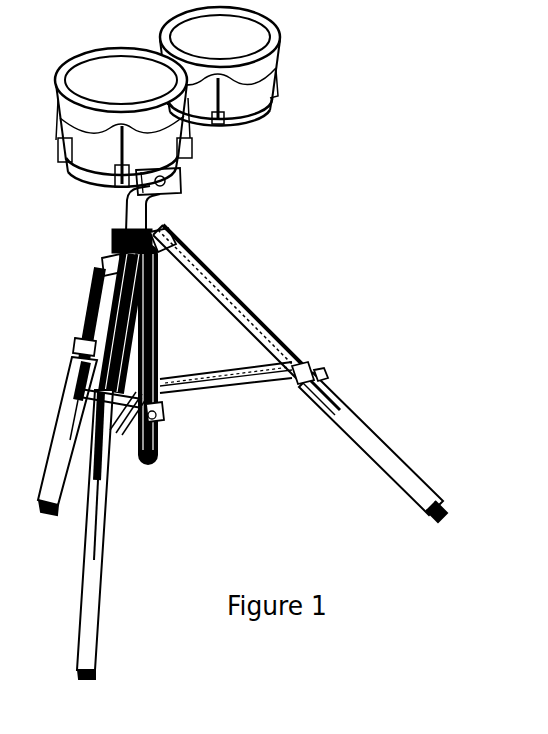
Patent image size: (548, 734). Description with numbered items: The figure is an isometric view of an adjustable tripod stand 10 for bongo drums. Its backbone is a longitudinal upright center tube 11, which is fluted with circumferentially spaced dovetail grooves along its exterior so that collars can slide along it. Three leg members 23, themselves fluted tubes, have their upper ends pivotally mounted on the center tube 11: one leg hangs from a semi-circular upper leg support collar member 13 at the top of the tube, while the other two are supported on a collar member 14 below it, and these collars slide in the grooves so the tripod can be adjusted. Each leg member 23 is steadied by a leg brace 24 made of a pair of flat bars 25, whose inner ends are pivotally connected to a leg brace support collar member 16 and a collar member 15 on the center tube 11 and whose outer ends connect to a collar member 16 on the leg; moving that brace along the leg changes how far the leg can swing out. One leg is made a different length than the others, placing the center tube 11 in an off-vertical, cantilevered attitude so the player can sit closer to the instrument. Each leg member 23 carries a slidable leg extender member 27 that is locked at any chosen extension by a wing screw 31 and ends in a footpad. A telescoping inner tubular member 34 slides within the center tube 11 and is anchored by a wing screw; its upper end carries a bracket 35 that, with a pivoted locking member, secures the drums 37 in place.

The adjustable tripod stand 10 is at (338, 348).
The center tube 11 is at (252, 320).
The upper leg support collar member 13 is at (178, 242).
The collar member 14 is at (147, 270).
The collar member 15 is at (157, 418).
The leg brace support collar member 16 is at (294, 367).
The leg member 23 is at (203, 267).
The leg brace 24 is at (259, 387).
The flat bar 25 is at (221, 388).
The leg extender member 27 is at (403, 450).
The wing screw 31 is at (327, 377).
The telescoping inner tubular member 34 is at (130, 212).
The bracket 35 is at (175, 183).
The drums 37 is at (93, 73).